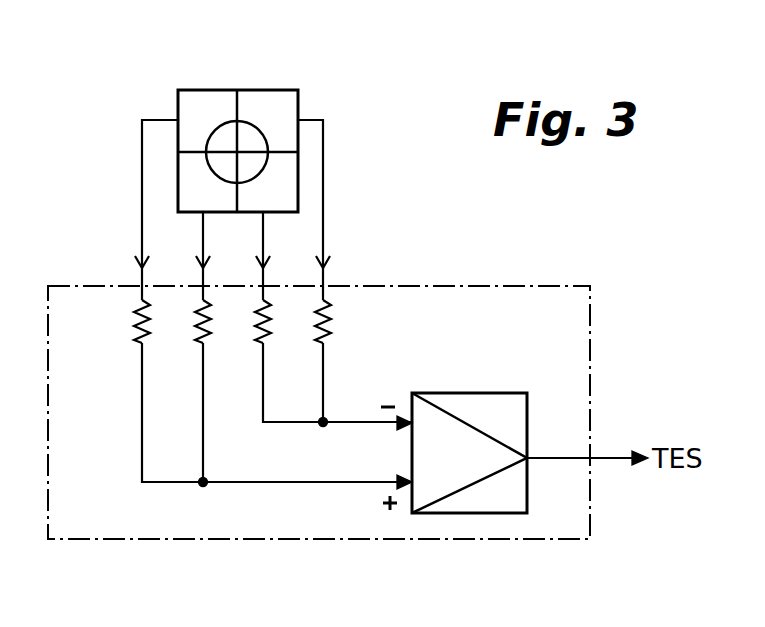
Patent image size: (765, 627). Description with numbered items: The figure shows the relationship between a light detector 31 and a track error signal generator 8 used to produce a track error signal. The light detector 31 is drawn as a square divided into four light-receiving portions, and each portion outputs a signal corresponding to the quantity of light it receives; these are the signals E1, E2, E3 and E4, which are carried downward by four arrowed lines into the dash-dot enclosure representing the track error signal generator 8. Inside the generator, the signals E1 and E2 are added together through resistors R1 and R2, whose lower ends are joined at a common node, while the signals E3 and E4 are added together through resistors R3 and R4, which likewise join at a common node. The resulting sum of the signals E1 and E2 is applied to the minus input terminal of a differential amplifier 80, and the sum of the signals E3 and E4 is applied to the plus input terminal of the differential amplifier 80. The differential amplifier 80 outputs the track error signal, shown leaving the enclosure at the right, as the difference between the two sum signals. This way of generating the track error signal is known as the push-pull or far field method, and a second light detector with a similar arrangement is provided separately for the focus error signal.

The light detector 31 is at (218, 76).
The track error signal generator 8 is at (546, 287).
The signal E4 is at (142, 187).
The signal E3 is at (203, 235).
The signal E2 is at (263, 233).
The signal E1 is at (323, 195).
The resistor R4 is at (134, 326).
The resistor R3 is at (197, 336).
The resistor R2 is at (271, 332).
The resistor R1 is at (331, 327).
The differential amplifier 80 is at (503, 393).